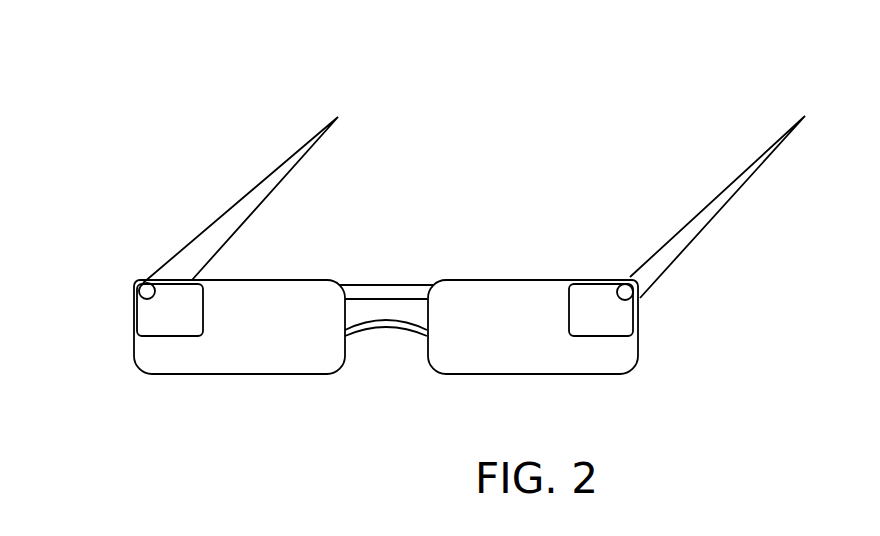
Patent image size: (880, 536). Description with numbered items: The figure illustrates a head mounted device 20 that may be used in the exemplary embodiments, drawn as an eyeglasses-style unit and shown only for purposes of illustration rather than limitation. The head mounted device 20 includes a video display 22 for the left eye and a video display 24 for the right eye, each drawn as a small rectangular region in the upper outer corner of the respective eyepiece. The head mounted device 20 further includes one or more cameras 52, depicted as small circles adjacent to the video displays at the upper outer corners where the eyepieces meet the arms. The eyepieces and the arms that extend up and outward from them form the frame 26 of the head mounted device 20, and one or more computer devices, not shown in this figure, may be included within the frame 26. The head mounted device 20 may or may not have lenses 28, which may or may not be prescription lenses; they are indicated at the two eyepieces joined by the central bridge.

The head mounted device 20 is at (153, 247).
The video display 22 is at (620, 315).
The video display 24 is at (150, 307).
The frame 26 is at (672, 250).
The lenses 28 is at (445, 346).
The cameras 52 is at (145, 285).